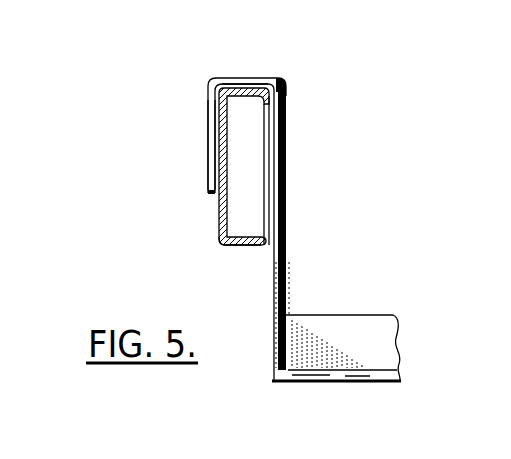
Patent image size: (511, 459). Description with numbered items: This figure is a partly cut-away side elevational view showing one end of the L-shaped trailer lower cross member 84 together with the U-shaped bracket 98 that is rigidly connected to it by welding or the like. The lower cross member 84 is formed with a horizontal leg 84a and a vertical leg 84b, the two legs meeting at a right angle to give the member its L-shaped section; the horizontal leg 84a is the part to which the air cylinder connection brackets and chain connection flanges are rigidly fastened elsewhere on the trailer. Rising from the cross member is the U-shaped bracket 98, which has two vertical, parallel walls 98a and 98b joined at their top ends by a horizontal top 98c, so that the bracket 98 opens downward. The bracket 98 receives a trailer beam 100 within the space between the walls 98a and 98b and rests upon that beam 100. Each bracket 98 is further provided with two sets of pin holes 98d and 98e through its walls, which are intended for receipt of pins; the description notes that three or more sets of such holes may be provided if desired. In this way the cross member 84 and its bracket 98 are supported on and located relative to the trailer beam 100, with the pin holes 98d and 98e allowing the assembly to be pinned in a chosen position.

The U-shaped bracket 98 is at (289, 116).
The vertical wall 98a is at (288, 218).
The vertical wall 98b is at (217, 143).
The horizontal top 98c is at (236, 92).
The pin holes 98d is at (217, 120).
The pin holes 98e is at (217, 170).
The trailer beam 100 is at (232, 244).
The trailer lower cross member 84 is at (398, 312).
The vertical leg 84b is at (326, 330).
The horizontal leg 84a is at (385, 381).